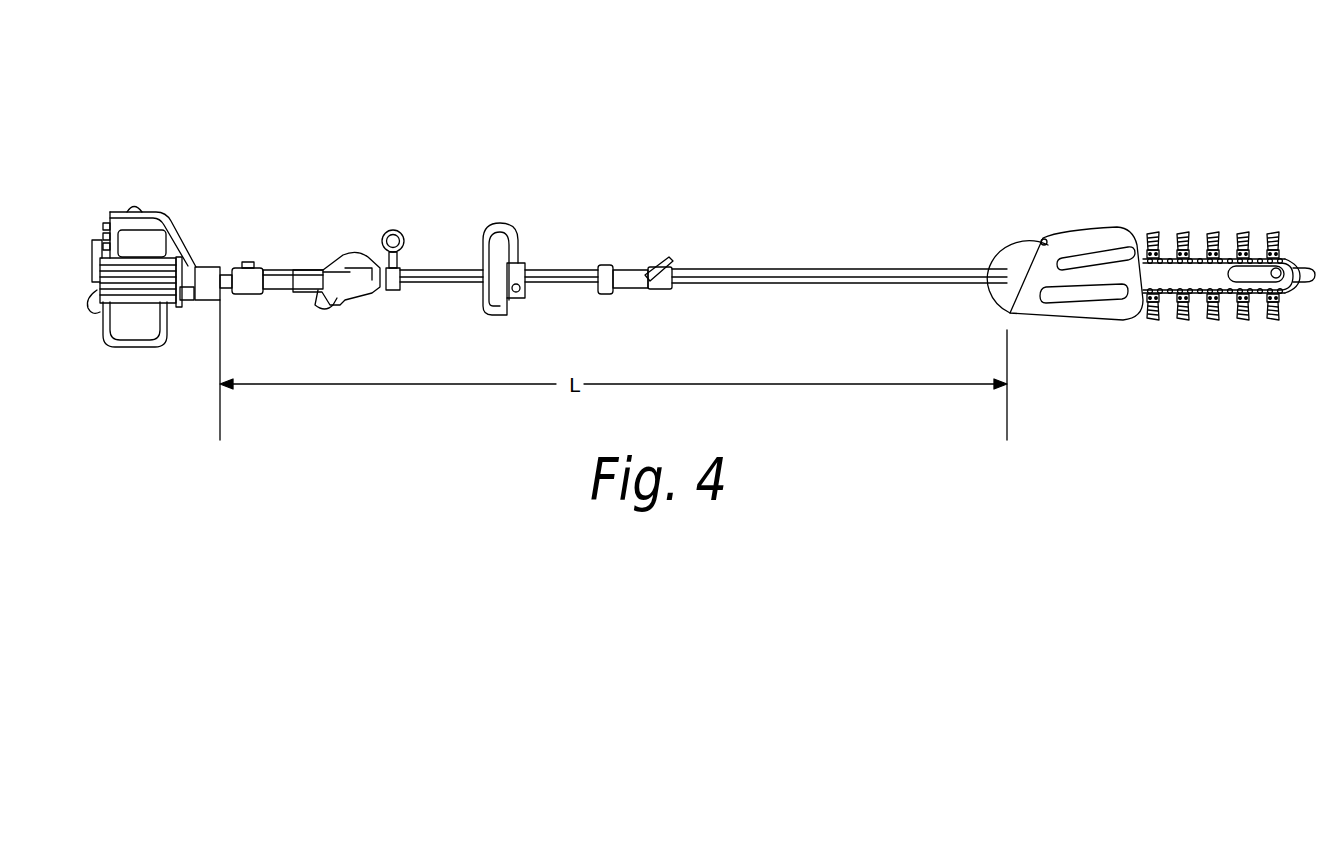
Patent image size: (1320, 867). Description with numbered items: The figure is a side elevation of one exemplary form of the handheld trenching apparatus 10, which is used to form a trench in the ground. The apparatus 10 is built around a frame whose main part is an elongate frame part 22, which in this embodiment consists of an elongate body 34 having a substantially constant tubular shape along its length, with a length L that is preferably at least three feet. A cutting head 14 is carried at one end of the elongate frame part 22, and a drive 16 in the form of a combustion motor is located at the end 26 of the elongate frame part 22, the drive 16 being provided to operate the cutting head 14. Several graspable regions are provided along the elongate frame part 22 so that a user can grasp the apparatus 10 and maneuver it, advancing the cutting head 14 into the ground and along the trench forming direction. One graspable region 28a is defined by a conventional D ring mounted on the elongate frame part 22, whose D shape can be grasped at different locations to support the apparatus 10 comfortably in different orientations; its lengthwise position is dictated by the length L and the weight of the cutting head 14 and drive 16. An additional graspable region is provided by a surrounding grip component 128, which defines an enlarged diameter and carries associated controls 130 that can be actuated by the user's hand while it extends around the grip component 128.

The handheld trenching apparatus 10 is at (1038, 161).
The cutting head 14 is at (1145, 215).
The drive 16 is at (187, 203).
The elongate frame part 22 is at (719, 254).
The second end 26 is at (212, 318).
The graspable region 28a is at (508, 212).
The elongate body 34 is at (822, 268).
The grip component 128 is at (300, 258).
The controls 130 is at (336, 318).